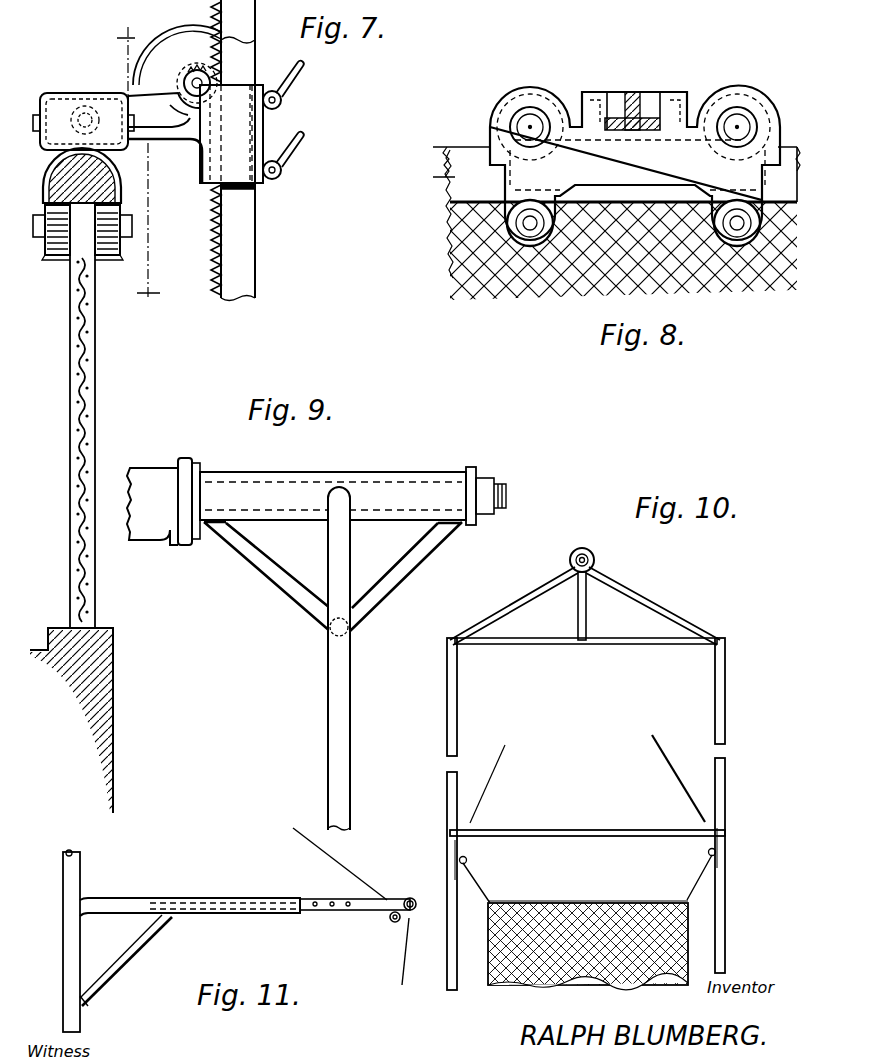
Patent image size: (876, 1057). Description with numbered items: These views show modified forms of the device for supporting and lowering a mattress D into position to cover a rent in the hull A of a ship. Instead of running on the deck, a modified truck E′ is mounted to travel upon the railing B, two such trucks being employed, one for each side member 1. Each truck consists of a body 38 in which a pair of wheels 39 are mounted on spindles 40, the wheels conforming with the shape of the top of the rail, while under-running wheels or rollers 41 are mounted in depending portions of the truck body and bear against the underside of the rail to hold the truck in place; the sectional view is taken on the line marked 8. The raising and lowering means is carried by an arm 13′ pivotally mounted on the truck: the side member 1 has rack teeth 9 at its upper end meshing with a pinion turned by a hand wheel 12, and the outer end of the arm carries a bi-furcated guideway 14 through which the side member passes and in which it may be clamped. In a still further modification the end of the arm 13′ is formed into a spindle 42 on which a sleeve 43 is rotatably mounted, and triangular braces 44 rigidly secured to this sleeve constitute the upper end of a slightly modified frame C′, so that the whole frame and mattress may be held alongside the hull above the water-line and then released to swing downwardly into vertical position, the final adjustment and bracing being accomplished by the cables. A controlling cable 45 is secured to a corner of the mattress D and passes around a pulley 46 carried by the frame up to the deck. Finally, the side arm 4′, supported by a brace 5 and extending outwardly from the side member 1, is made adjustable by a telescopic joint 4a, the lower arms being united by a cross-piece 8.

In FIG. 7, the side member 1 is at (245, 215).
In FIG. 11, the side member 1 is at (75, 878).
In FIG. 11, the arm 4′ is at (220, 901).
In FIG. 11, the telescopic joint 4a is at (302, 913).
In FIG. 11, the brace 5 is at (115, 972).
In FIG. 7, the cross-piece 8 is at (135, 166).
In FIG. 7, the rack teeth 9 is at (212, 200).
In FIG. 7, the hand wheel 12 is at (187, 26).
In FIG. 7, the arm 13′ is at (165, 138).
In FIG. 8, the arm 13′ is at (638, 90).
In FIG. 9, the arm 13′ is at (152, 473).
In FIG. 7, the bi-furcated guideway 14 is at (242, 135).
In FIG. 7, the truck body 38 is at (75, 92).
In FIG. 8, the truck body 38 is at (635, 142).
In FIG. 7, the wheels 39 is at (62, 147).
In FIG. 8, the wheels 39 is at (527, 97).
In FIG. 7, the spindles 40 is at (140, 133).
In FIG. 8, the spindles 40 is at (531, 133).
In FIG. 7, the under-running wheels or rollers 41 is at (67, 257).
In FIG. 8, the under-running wheels or rollers 41 is at (532, 247).
In FIG. 9, the spindle 42 is at (413, 480).
In FIG. 9, the sleeve 43 is at (330, 477).
In FIG. 9, the triangular braces 44 is at (405, 561).
In FIG. 10, the triangular braces 44 is at (580, 612).
In FIG. 11, the controlling cable 45 is at (394, 972).
In FIG. 11, the pulley 46 is at (393, 922).
In FIG. 7, the hull A is at (113, 700).
In FIG. 7, the railing B is at (100, 188).
In FIG. 8, the railing B is at (455, 172).
In FIG. 9, the frame C′ is at (329, 737).
In FIG. 10, the frame C′ is at (586, 814).
In FIG. 10, the mattress D is at (577, 908).
In FIG. 7, the truck E′ is at (52, 92).
In FIG. 8, the truck E′ is at (612, 170).